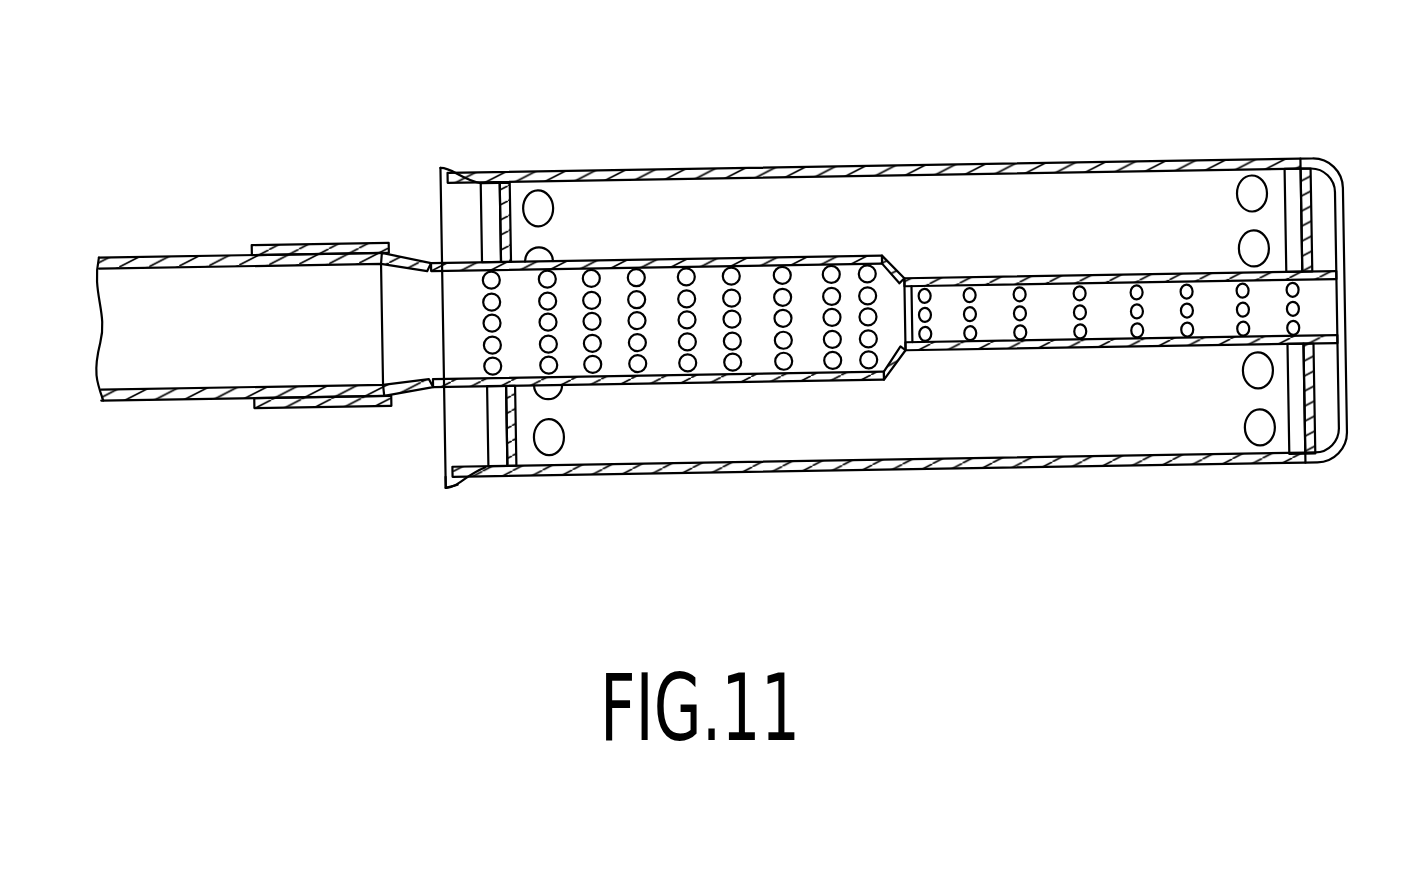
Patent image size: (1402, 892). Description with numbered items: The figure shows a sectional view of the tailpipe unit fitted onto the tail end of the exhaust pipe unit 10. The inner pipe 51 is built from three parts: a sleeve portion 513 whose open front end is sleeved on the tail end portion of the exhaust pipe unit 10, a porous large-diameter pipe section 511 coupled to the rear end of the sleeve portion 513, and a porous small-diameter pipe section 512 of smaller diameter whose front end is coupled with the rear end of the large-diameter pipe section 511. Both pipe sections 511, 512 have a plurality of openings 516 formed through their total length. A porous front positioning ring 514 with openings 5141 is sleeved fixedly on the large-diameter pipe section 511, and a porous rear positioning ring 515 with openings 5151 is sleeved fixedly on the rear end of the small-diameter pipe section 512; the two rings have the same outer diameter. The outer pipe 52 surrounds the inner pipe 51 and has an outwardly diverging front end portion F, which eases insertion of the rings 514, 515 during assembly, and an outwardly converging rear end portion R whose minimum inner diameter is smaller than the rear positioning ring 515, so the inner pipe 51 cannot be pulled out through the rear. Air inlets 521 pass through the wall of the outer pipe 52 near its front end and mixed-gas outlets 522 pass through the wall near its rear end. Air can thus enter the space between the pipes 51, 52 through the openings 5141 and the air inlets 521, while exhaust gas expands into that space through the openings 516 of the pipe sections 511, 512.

The exhaust pipe unit 10 is at (225, 272).
The sleeve portion 513 is at (310, 405).
The front positioning ring 514 is at (490, 173).
The openings 5141 is at (500, 212).
The front end portion F is at (445, 484).
The outer pipe 52 is at (805, 167).
The air inlets 521 is at (535, 173).
The mixed-gas outlets 522 is at (1247, 165).
The inner pipe 51 is at (884, 323).
The large-diameter pipe section 511 is at (757, 383).
The openings 516 is at (837, 363).
The small-diameter pipe section 512 is at (1082, 347).
The rear positioning ring 515 is at (1302, 167).
The openings 5151 is at (1313, 215).
The rear end portion R is at (1330, 452).